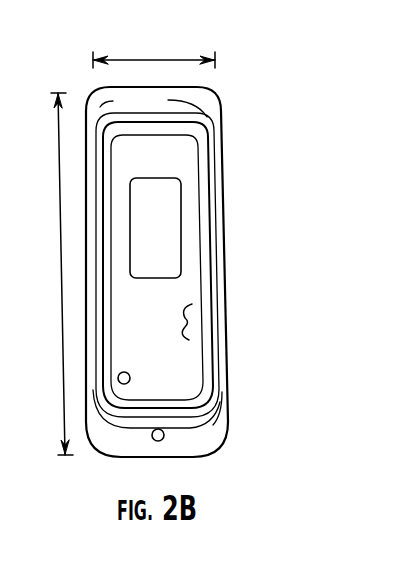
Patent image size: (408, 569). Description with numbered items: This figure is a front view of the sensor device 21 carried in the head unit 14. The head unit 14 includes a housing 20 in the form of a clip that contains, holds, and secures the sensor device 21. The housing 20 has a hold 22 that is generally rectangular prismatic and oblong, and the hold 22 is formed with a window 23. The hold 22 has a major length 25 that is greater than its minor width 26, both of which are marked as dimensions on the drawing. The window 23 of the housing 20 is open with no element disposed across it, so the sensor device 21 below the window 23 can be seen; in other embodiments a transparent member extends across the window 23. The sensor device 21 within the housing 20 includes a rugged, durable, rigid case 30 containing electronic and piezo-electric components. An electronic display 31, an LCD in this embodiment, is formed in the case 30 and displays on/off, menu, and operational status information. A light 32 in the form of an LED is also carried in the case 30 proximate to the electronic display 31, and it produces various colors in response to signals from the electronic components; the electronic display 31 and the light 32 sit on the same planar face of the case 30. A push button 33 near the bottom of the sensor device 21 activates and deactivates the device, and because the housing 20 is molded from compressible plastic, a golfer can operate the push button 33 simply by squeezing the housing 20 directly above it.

The head unit 14 is at (212, 100).
The housing 20 is at (228, 412).
The sensor device 21 is at (181, 148).
The hold 22 is at (226, 262).
The window 23 is at (190, 323).
The major length 25 is at (53, 300).
The minor width 26 is at (153, 58).
The case 30 is at (200, 375).
The electronic display 31 is at (185, 227).
The light 32 is at (130, 383).
The push button 33 is at (165, 435).